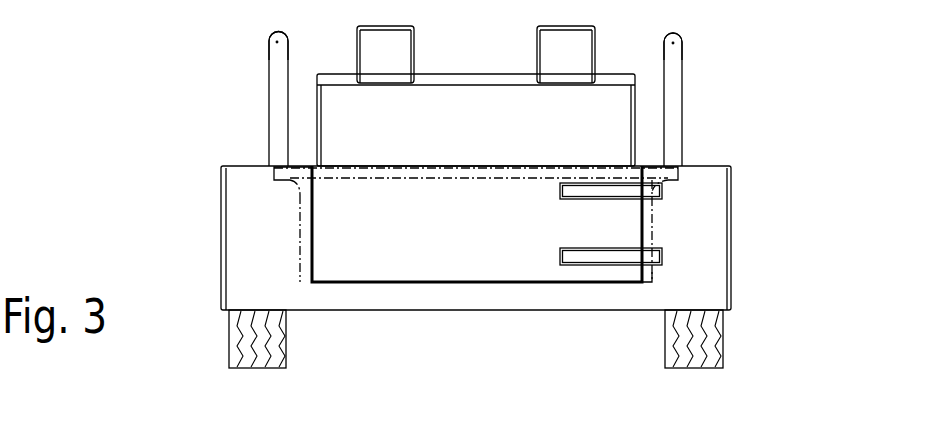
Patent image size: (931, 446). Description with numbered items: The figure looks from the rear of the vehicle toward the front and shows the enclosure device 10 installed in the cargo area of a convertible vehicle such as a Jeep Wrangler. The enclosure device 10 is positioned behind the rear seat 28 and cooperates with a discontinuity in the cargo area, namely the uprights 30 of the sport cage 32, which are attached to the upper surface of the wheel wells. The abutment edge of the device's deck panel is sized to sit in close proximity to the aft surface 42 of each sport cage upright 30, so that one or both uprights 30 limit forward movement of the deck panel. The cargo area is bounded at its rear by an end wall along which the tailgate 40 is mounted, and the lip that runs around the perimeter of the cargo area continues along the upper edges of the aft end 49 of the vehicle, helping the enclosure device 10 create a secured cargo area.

The enclosure device 10 is at (300, 228).
The rear seat 28 is at (463, 153).
The upright 30 is at (269, 145).
The sport cage 32 is at (269, 77).
The tailgate 40 is at (451, 242).
The aft surface 42 is at (268, 156).
The aft end 49 is at (670, 207).